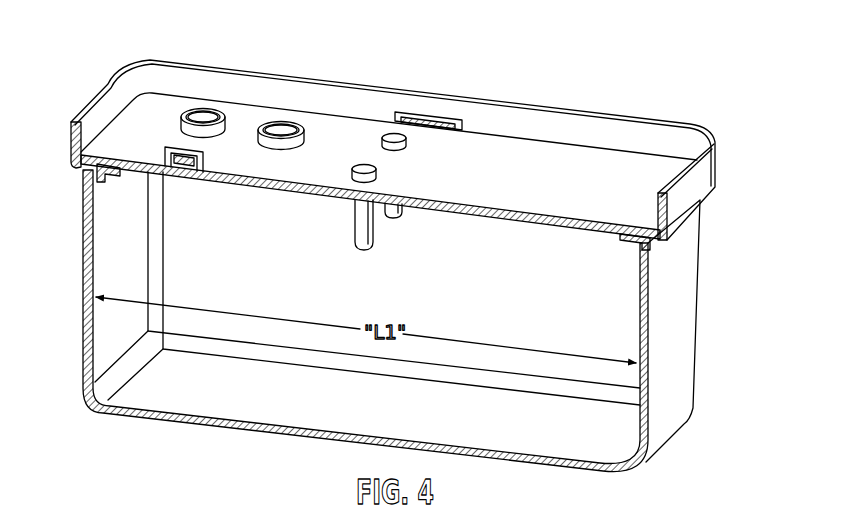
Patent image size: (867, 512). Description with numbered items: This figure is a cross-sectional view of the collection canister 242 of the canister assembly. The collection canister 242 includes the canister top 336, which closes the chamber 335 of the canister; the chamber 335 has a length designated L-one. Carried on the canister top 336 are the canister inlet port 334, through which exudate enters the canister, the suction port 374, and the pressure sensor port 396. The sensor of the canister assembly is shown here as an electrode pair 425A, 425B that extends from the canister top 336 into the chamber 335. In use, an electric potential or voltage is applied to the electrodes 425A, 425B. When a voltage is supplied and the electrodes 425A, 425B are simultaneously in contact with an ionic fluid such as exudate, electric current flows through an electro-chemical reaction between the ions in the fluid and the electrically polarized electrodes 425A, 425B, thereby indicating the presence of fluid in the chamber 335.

The collection canister 242 is at (606, 72).
The canister top 336 is at (619, 163).
The chamber 335 is at (135, 270).
The suction port 374 is at (200, 113).
The pressure sensor port 396 is at (280, 126).
The canister inlet port 334 is at (184, 165).
The electrode 425A is at (376, 251).
The electrode 425B is at (407, 221).